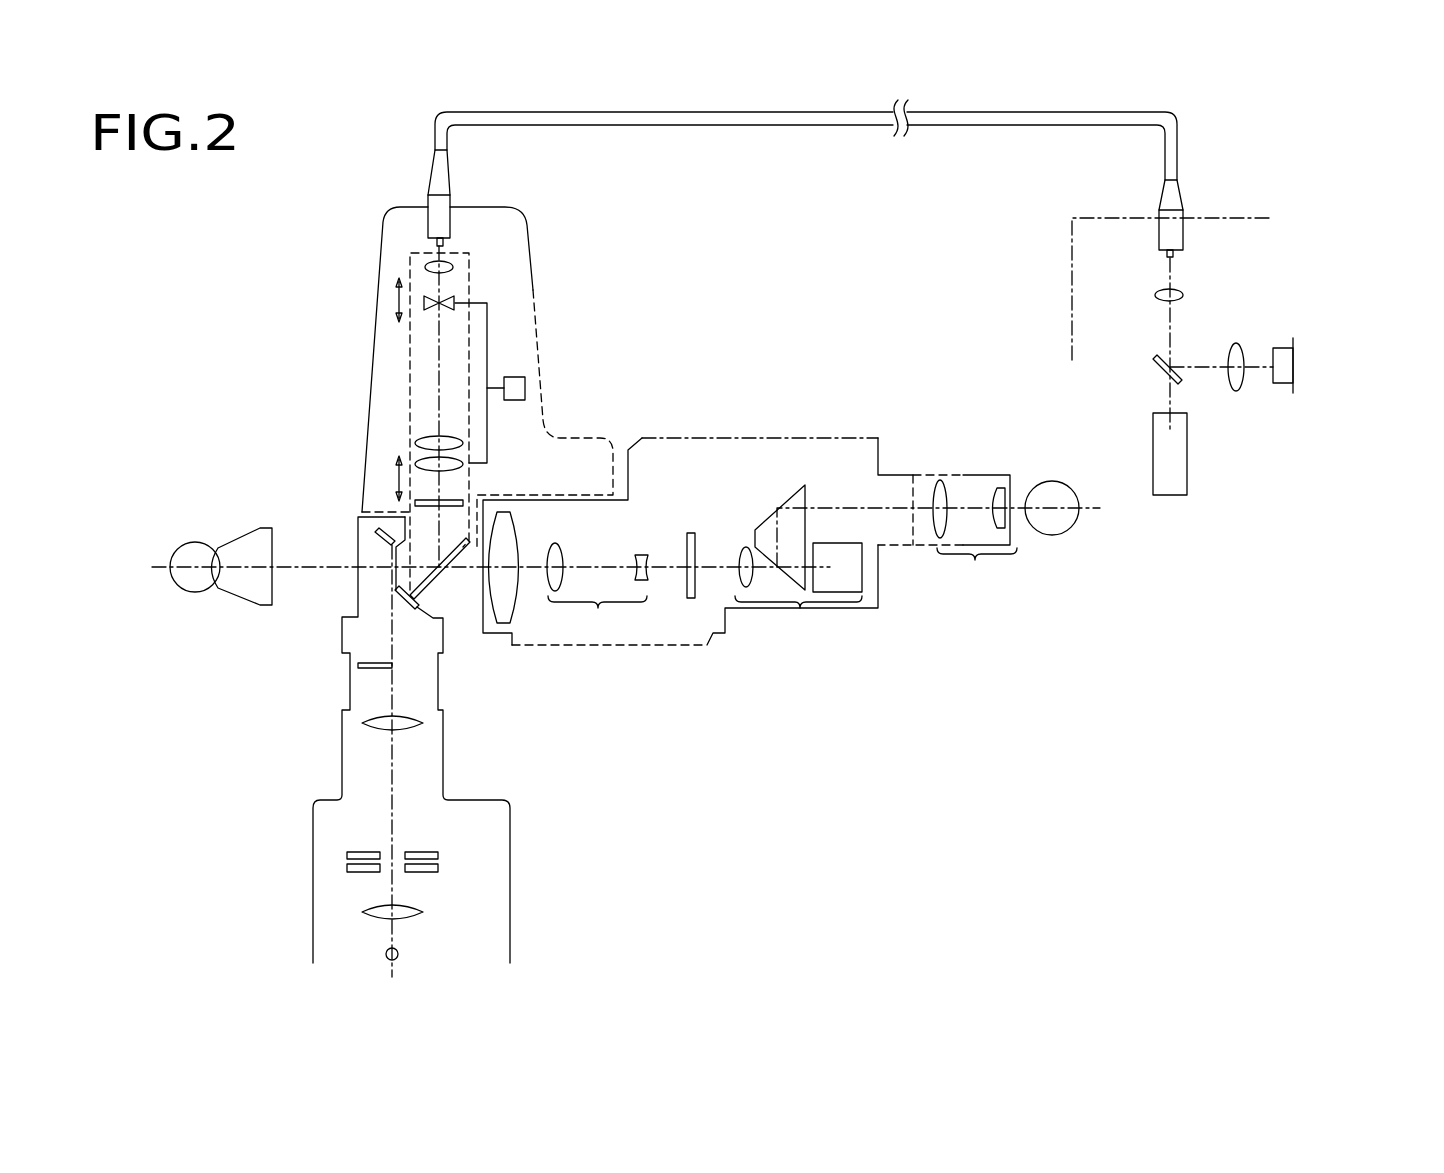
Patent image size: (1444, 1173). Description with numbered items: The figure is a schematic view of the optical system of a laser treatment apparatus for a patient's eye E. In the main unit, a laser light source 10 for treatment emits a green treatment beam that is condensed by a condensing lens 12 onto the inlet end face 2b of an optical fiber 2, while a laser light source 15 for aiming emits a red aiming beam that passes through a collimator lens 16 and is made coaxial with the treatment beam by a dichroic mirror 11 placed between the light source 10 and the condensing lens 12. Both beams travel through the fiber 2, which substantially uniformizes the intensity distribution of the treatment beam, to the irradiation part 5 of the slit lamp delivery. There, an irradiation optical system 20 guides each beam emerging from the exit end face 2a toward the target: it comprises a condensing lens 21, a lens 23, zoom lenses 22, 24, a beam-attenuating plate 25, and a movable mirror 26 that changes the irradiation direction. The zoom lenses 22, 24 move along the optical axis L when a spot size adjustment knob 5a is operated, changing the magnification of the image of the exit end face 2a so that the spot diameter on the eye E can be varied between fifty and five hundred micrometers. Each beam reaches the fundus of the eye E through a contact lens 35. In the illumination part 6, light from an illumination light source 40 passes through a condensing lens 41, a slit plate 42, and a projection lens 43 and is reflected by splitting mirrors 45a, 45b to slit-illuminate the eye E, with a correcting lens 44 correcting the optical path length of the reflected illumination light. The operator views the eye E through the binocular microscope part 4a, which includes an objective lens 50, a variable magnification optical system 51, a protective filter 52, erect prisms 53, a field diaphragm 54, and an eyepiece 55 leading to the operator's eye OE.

The optical fiber 2 is at (750, 125).
The exit end face 2a is at (437, 243).
The inlet end face 2b is at (1183, 255).
The irradiation part 5 is at (487, 207).
The spot size adjustment knob 5a is at (525, 387).
The irradiation optical system 20 is at (470, 272).
The condensing lens 21 is at (424, 262).
The zoom lens 22 is at (455, 302).
The lens 23 is at (427, 437).
The zoom lens 24 is at (415, 457).
The beam-attenuating plate 25 is at (465, 500).
The movable mirror 26 is at (428, 605).
The binocular microscope part 4a is at (735, 438).
The field diaphragm 54 is at (915, 485).
The eyepiece 55 is at (975, 558).
The objective lens 50 is at (510, 625).
The variable magnification optical system 51 is at (598, 606).
The protective filter 52 is at (690, 600).
The erect prisms 53 is at (800, 606).
The contact lens 35 is at (240, 530).
The splitting mirror 45a is at (376, 532).
The splitting mirror 45b is at (397, 597).
The correcting lens 44 is at (358, 666).
The projection lens 43 is at (423, 723).
The slit plate 42 is at (438, 855).
The condensing lens 41 is at (423, 910).
The illumination light source 40 is at (398, 954).
The illumination part 6 is at (342, 777).
The condensing lens 12 is at (1183, 292).
The dichroic mirror 11 is at (1152, 365).
The collimator lens 16 is at (1236, 343).
The laser light source for aiming 15 is at (1293, 355).
The laser light source for treatment 10 is at (1187, 460).
The optical axis L is at (440, 348).
The patient's eye E is at (195, 592).
The operator's eye OE is at (1053, 535).